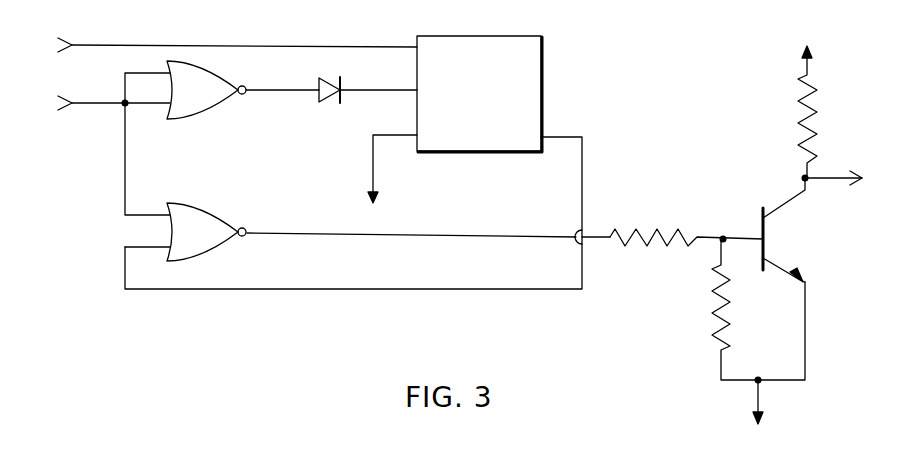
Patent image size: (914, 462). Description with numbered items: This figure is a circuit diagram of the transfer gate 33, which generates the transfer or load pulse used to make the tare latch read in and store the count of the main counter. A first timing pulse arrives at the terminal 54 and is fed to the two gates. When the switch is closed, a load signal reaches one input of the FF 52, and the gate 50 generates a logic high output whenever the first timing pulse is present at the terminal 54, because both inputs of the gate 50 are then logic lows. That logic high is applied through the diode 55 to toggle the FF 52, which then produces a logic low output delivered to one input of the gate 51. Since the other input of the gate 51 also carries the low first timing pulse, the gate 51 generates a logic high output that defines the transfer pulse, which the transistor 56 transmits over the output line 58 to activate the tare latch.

The drive circuit 33 is at (605, 62).
The gate 50 is at (213, 102).
The gate 51 is at (207, 217).
The FF 52 is at (532, 73).
The terminal 54 is at (87, 105).
The diode 55 is at (329, 100).
The transistor 56 is at (785, 238).
The output line 58 is at (827, 182).